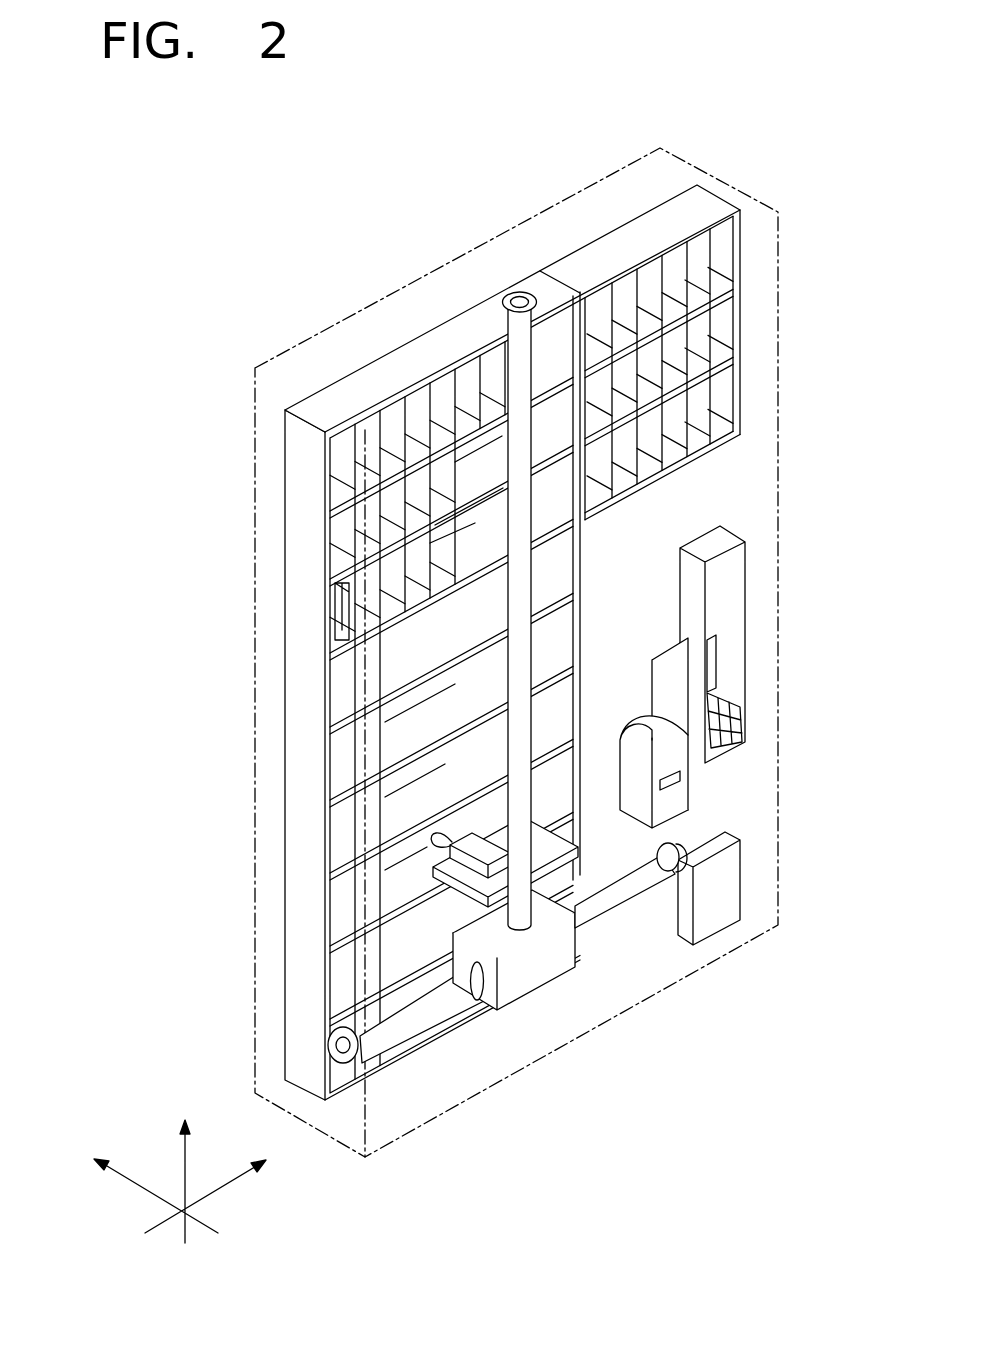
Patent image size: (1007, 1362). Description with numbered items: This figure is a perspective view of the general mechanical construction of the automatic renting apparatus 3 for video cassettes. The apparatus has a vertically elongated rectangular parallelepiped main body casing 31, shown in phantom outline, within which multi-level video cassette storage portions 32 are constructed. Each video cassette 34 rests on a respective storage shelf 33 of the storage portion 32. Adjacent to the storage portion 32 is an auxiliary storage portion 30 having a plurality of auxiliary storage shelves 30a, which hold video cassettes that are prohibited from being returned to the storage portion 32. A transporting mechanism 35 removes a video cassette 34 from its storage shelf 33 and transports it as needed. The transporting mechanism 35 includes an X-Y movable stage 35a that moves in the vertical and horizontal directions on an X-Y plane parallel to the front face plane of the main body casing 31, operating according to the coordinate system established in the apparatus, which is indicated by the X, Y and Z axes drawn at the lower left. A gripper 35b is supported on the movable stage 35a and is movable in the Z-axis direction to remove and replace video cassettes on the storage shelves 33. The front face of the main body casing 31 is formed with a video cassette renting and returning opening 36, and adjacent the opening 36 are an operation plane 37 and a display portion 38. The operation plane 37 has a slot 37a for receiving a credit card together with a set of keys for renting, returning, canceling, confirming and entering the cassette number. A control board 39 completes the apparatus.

The automatic renting apparatus 3 is at (432, 267).
The auxiliary storage portion 30 is at (521, 608).
The auxiliary storage shelves 30a is at (727, 320).
The main body casing 31 is at (778, 337).
The video cassette storage portions 32 is at (283, 450).
The storage shelf 33 is at (342, 563).
The video cassette 34 is at (345, 641).
The transporting mechanism 35 is at (543, 987).
The X-Y movable stage 35a is at (573, 898).
The gripper 35b is at (467, 863).
The video cassette renting and returning opening 36 is at (697, 807).
The operation plane 37 is at (743, 714).
The slot 37a is at (715, 648).
The display portion 38 is at (773, 644).
The control board 39 is at (723, 897).